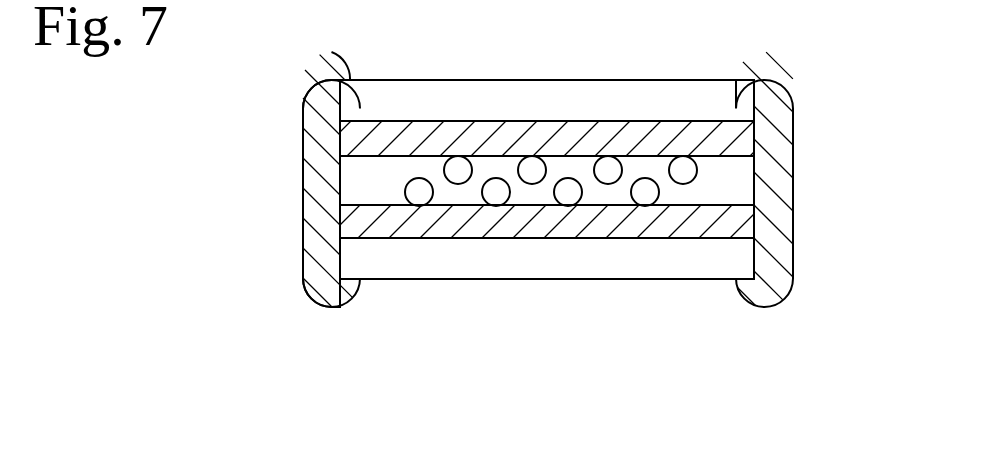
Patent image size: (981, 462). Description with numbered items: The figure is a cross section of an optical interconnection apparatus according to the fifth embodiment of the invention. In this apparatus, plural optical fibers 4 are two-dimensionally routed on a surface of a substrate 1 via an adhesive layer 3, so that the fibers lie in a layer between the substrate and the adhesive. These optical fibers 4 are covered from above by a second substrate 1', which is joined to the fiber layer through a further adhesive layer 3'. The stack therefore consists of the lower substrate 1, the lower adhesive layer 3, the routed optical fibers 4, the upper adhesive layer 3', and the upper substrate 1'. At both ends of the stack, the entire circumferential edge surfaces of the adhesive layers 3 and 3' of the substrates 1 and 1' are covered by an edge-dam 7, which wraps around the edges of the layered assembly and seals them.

The substrate 1 is at (547, 285).
The substrate 1' is at (547, 72).
The adhesive layer 3 is at (547, 267).
The adhesive layer 3' is at (547, 94).
The optical fibers 4 is at (495, 183).
The edge-dam 7 is at (317, 184).